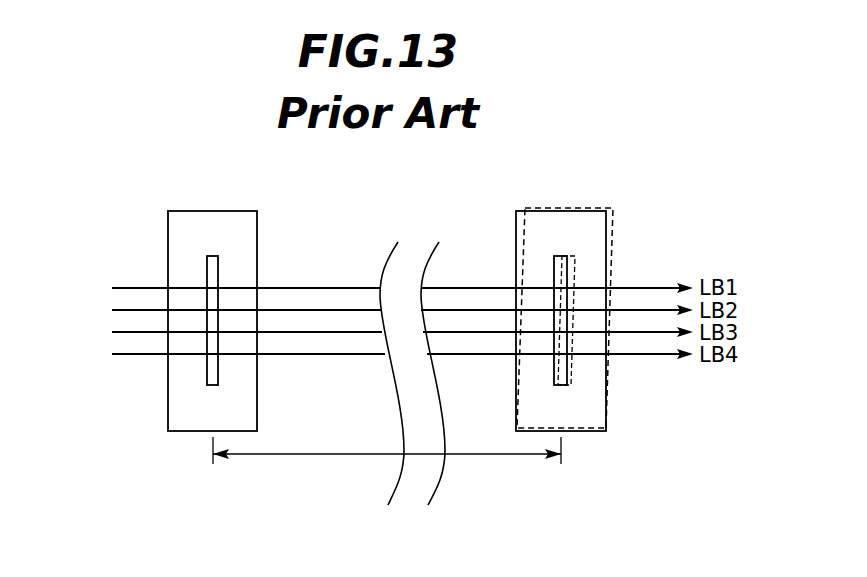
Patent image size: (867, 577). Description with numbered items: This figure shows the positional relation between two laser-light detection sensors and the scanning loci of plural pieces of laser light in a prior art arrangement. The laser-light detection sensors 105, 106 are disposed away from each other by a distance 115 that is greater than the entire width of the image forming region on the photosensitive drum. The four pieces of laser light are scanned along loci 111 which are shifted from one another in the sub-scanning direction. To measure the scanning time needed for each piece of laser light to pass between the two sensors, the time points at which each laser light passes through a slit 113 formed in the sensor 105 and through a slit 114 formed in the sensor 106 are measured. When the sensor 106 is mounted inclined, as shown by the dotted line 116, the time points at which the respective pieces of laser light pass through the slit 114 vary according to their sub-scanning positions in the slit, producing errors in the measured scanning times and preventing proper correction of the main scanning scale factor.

The laser-light detection sensor 105 is at (230, 211).
The laser-light detection sensor 106 is at (519, 211).
The scanning loci 111 is at (95, 273).
The slit 113 is at (207, 378).
The slit 114 is at (563, 377).
The distance 115 is at (290, 456).
The dotted line 116 is at (614, 239).